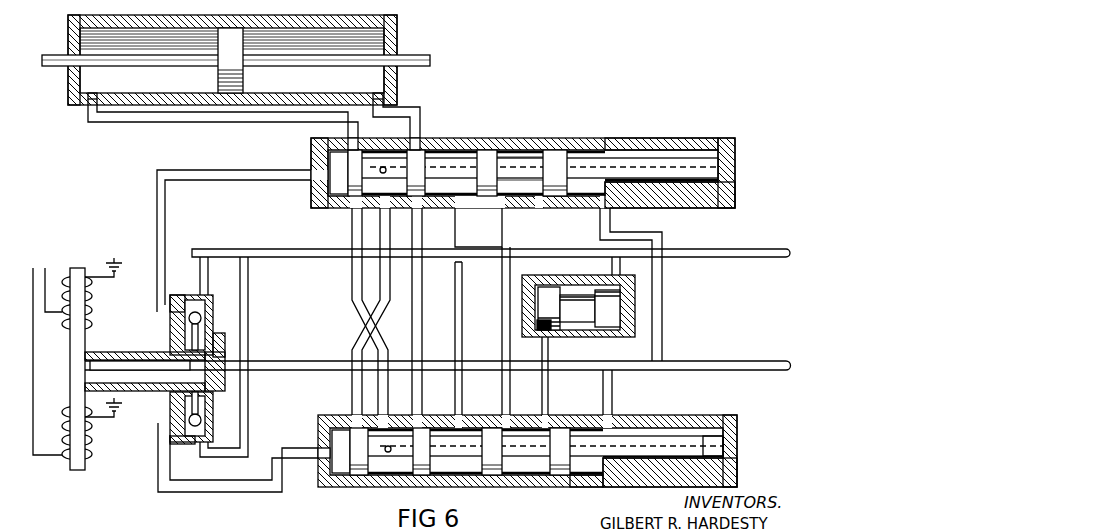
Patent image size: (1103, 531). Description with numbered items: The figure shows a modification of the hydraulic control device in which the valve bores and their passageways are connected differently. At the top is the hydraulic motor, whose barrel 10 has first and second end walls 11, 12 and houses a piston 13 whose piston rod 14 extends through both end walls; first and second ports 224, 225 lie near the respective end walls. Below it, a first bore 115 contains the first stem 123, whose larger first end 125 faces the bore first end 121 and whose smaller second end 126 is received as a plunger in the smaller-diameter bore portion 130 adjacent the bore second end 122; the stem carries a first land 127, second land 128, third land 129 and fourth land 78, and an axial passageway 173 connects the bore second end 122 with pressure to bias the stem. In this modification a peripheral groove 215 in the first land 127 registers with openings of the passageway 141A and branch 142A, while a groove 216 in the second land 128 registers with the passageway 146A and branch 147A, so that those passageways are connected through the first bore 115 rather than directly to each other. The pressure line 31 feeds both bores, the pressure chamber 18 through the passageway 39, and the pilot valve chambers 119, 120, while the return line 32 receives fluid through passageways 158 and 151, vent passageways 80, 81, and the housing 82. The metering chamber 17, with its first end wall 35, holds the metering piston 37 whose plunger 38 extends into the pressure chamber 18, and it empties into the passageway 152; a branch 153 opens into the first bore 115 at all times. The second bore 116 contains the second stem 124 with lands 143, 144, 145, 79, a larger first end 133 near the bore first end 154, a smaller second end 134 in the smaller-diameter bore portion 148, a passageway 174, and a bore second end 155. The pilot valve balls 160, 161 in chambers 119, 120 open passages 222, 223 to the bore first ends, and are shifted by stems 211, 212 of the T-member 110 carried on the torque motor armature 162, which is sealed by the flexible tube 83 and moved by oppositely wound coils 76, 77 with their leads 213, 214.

The barrel 10 is at (248, 52).
The first end wall 11 is at (68, 42).
The second end wall 12 is at (397, 31).
The piston 13 is at (241, 55).
The piston rod 14 is at (430, 58).
The first port 224 is at (90, 99).
The second port 225 is at (373, 95).
The first fluid-conducting means passageway 141A is at (112, 123).
The second fluid-conducting means passageway 146A is at (420, 112).
The first bore 115 is at (527, 153).
The first bore first end 121 is at (312, 169).
The first stem first end 125 is at (332, 184).
The first land 127 is at (364, 152).
The second land 128 is at (455, 160).
The third land 129 is at (497, 160).
The first stem 123 is at (533, 155).
The fourth land 78 is at (570, 160).
The smaller-diameter bore portion 130 is at (640, 141).
The axial passageway 173 is at (680, 166).
The first bore second end 122 is at (735, 143).
The first stem second end 126 is at (720, 170).
The peripheral groove 215 is at (350, 148).
The groove 216 is at (416, 152).
The passage 222 is at (178, 174).
The pressure line 31 is at (748, 249).
The return line 32 is at (748, 361).
The second fluid-conducting means branch 147A is at (360, 343).
The first fluid-conducting means branch 142A is at (440, 338).
The branch 153 is at (478, 227).
The passageway 152 is at (463, 329).
The passageway 151 is at (502, 389).
The passageway 158 is at (549, 389).
The passageway 80 is at (663, 237).
The passageway 81 is at (612, 401).
The passageway 39 is at (613, 268).
The metering chamber 17 is at (555, 307).
The metering piston 37 is at (548, 290).
The plunger 38 is at (577, 308).
The pressure chamber 18 is at (636, 320).
The first end wall 35 is at (524, 331).
The electrical lead 213 is at (33, 268).
The electrical lead 214 is at (45, 268).
The coil 76 is at (95, 306).
The coil 77 is at (96, 457).
The armature 162 is at (80, 268).
The T-member 110 is at (130, 353).
The flexible tube 83 is at (165, 392).
The pilot valve chamber 119 is at (181, 300).
The ball 160 is at (188, 321).
The stem 211 is at (200, 329).
The housing 82 is at (225, 341).
The ball 161 is at (205, 421).
The stem 212 is at (203, 403).
The pilot valve chamber 120 is at (180, 447).
The passage 223 is at (203, 492).
The second bore 116 is at (532, 455).
The passageway 174 is at (662, 438).
The second bore first end 154 is at (322, 487).
The first land 143 is at (362, 483).
The second land 144 is at (440, 483).
The third land 145 is at (505, 483).
The fourth land 79 is at (575, 483).
The second stem 124 is at (600, 488).
The smaller-diameter bore portion 148 is at (640, 488).
The second stem second end 134 is at (725, 447).
The second bore second end 155 is at (737, 479).
The second stem first end 133 is at (318, 447).